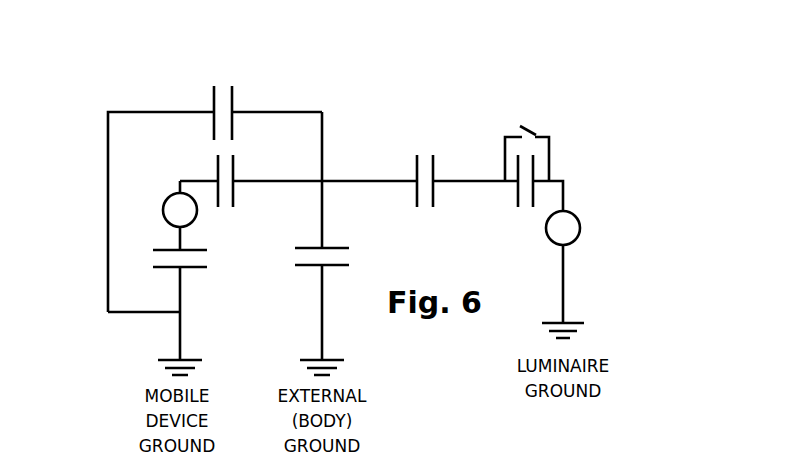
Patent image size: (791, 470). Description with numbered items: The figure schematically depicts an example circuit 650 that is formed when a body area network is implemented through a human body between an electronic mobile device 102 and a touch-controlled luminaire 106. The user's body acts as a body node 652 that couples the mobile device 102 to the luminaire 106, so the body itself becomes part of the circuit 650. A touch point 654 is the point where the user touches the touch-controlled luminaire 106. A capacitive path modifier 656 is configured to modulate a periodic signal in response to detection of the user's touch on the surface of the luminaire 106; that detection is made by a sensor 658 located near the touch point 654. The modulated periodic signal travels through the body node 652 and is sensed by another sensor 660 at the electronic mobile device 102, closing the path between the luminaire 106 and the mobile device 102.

The electronic mobile device 102 is at (50, 136).
The touch-controlled luminaire 106 is at (667, 110).
The circuit 650 is at (730, 63).
The body node 652 is at (390, 117).
The touch point 654 is at (450, 167).
The capacitive path modifier 656 is at (573, 152).
The sensor 658 is at (603, 228).
The sensor 660 is at (146, 200).